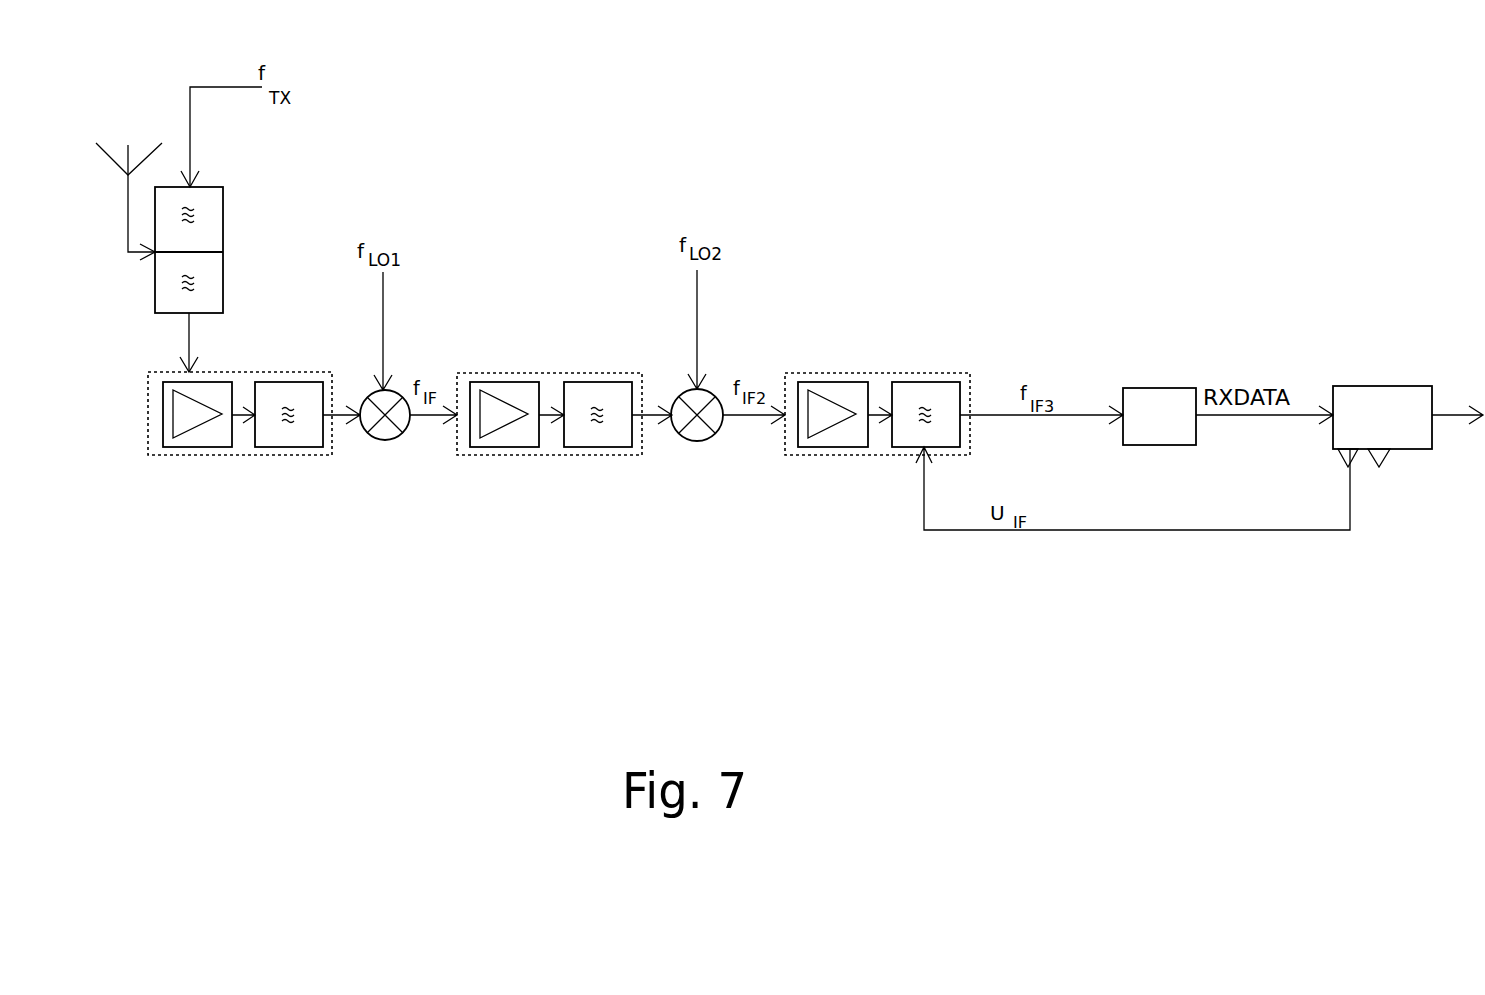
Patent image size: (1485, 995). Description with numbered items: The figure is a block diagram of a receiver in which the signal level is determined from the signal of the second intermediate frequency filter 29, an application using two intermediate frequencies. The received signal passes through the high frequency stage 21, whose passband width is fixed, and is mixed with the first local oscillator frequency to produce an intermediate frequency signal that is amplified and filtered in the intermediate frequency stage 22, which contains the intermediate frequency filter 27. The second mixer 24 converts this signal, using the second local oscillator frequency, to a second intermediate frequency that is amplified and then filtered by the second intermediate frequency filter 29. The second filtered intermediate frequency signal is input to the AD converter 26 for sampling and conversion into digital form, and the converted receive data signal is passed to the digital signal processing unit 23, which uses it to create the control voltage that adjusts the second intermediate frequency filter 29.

The high frequency stage 21 is at (204, 455).
The intermediate frequency stage 22 is at (549, 421).
The intermediate frequency filter 27 is at (593, 373).
The second mixer 24 is at (700, 443).
The second intermediate frequency filter 29 is at (952, 382).
The AD converter 26 is at (1143, 388).
The digital signal processing unit 23 is at (1375, 386).